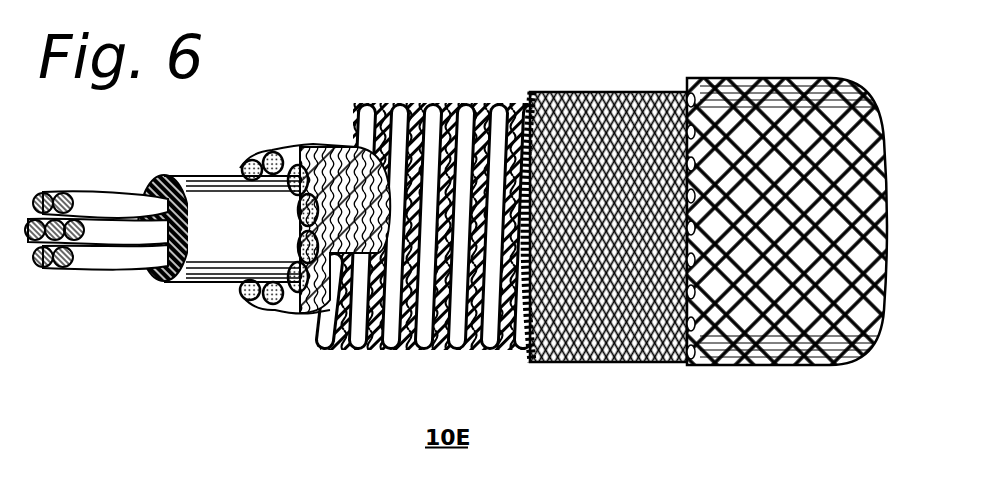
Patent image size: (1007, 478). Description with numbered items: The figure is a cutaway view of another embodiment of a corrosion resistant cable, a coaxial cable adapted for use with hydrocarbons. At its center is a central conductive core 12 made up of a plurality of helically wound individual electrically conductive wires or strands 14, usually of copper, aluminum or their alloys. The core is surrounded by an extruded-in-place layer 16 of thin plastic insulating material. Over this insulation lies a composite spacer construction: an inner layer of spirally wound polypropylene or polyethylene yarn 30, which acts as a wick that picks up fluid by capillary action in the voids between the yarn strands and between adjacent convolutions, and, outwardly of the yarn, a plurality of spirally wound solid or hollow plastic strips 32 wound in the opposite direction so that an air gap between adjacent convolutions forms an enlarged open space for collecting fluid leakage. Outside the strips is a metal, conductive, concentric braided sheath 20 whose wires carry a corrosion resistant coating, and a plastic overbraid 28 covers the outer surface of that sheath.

The central conductive core 12 is at (88, 272).
The electrically conductive wires or strands 14 is at (112, 218).
The extruded-in-place layer of thin plastic insulating material 16 is at (200, 183).
The braided sheath 20 is at (578, 92).
The plastic overbraid 28 is at (752, 80).
The spirally wound yarn 30 is at (350, 145).
The spirally wound plastic strips 32 is at (480, 103).